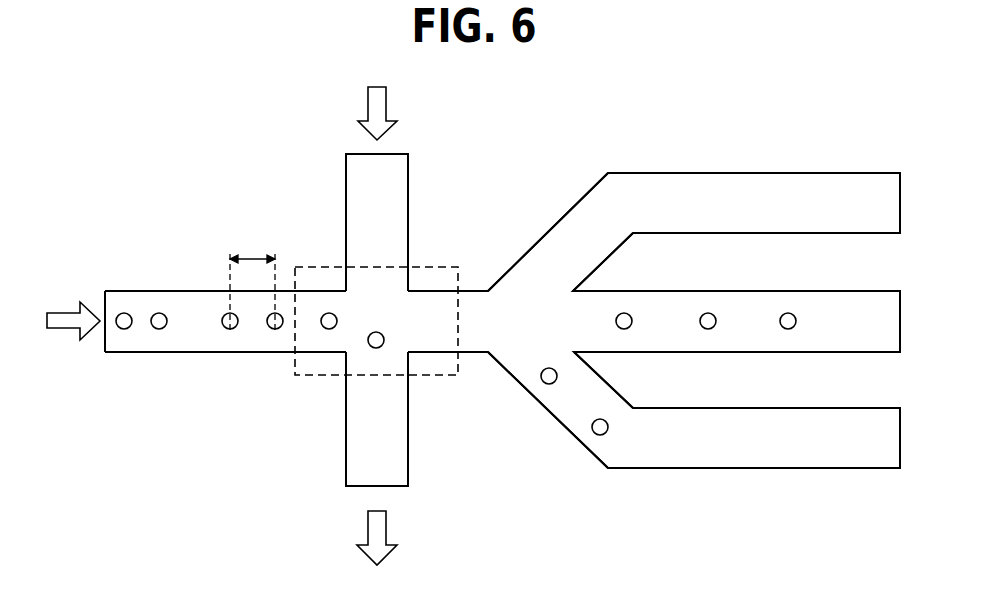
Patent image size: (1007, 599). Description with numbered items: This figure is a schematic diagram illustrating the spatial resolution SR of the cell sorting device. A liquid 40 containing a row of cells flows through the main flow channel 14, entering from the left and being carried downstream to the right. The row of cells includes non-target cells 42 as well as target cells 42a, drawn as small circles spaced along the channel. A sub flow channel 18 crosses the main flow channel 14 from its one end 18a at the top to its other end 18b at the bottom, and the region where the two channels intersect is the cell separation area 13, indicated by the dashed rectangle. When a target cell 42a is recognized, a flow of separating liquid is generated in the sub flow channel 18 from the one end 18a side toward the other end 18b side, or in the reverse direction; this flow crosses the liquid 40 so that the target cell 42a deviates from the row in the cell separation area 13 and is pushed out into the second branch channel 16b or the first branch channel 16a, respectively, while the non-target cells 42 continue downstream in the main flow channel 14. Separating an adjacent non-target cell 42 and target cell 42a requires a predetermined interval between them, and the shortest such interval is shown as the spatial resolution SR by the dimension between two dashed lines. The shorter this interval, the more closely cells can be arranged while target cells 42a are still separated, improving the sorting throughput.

The cell separation area 13 is at (318, 266).
The main flow channel 14 is at (176, 353).
The first branch channel 16a is at (554, 222).
The second branch channel 16b is at (552, 422).
The sub flow channel 18 is at (346, 192).
The one end of the sub flow channel 18a is at (360, 153).
The other end of the sub flow channel 18b is at (358, 487).
The liquid 40 is at (127, 300).
The non-target cell 42 is at (124, 330).
The target cell 42a is at (160, 312).
The spatial resolution SR is at (252, 280).